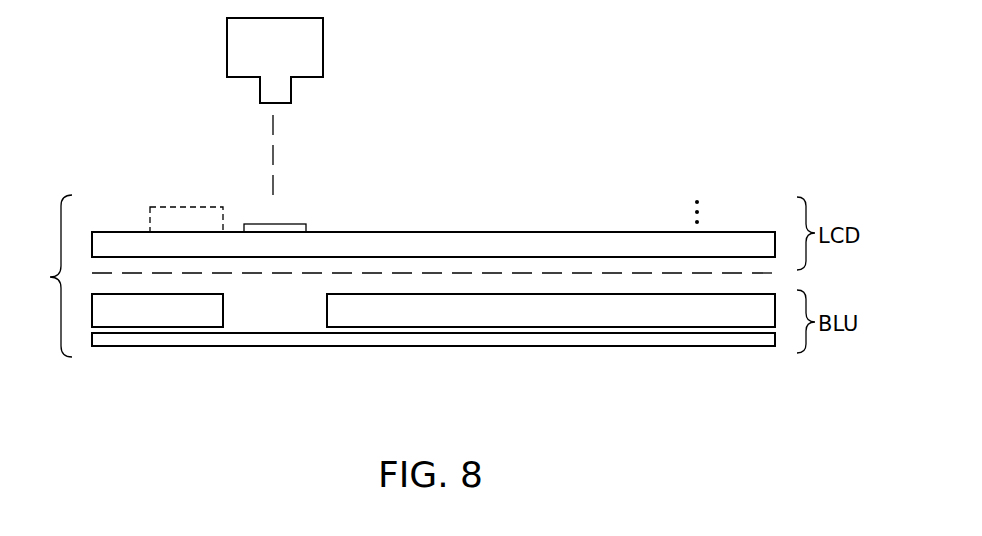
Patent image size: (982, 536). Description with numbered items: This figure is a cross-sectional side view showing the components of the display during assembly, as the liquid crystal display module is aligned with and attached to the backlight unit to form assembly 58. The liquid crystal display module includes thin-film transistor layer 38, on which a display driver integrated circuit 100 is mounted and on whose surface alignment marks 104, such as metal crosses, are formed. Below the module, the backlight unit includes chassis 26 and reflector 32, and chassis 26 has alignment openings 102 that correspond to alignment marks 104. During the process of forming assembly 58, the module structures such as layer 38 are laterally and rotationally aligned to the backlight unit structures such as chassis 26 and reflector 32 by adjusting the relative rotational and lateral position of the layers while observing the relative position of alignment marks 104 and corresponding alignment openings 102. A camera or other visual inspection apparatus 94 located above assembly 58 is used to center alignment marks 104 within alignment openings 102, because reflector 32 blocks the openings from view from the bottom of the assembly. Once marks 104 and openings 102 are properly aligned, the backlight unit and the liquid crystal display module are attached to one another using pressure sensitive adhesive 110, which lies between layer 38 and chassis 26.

The camera or other visual inspection apparatus 94 is at (323, 42).
The assembly 58 is at (46, 276).
The thin-film transistor layer 38 is at (548, 246).
The pressure sensitive adhesive 110 is at (427, 273).
The display driver integrated circuit 100 is at (170, 207).
The alignment marks 104 is at (290, 224).
The chassis 26 is at (163, 315).
The reflector 32 is at (580, 340).
The alignment openings 102 is at (326, 310).